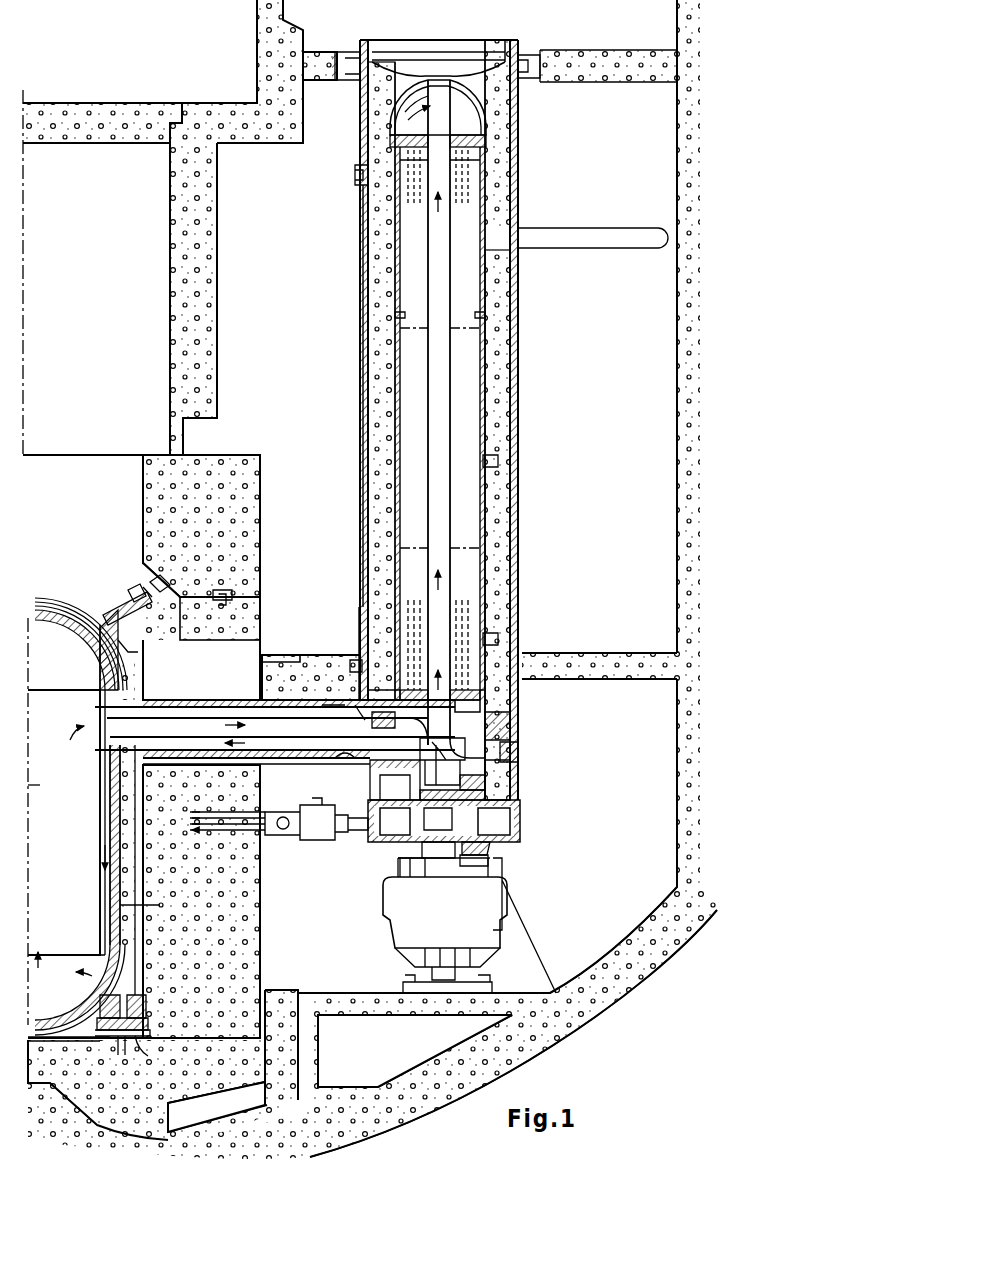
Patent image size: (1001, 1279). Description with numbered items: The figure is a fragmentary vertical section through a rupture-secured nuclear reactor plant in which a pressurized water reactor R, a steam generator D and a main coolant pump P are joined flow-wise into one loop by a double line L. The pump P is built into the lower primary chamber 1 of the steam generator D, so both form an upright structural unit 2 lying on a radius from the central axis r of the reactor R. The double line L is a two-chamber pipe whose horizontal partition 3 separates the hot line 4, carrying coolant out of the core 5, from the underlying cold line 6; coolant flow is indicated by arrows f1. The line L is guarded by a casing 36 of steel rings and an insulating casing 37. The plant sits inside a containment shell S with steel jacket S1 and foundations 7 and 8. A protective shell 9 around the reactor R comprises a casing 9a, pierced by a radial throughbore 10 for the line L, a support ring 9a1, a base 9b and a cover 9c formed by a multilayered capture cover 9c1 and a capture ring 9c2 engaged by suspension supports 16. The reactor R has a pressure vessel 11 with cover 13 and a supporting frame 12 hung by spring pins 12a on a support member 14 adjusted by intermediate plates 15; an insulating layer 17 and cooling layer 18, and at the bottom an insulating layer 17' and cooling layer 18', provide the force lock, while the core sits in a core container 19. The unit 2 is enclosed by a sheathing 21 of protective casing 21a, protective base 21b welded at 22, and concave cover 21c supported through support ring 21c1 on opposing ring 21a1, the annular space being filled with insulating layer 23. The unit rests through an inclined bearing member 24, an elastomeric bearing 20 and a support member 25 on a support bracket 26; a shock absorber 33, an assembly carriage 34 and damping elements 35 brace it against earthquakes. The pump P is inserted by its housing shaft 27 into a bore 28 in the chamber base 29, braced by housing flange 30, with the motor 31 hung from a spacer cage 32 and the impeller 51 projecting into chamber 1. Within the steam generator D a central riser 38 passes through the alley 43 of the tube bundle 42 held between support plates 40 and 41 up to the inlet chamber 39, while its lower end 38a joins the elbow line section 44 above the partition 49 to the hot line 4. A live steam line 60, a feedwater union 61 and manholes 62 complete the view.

The lower primary chamber 1 is at (485, 710).
The structural unit 2 is at (526, 572).
The partition 3 is at (282, 750).
The hot line 4 is at (300, 707).
The core 5 is at (57, 836).
The cold line 6 is at (322, 764).
The foundation 7 is at (58, 1120).
The foundation 8 is at (428, 1012).
The shell protective against rupture 9 is at (268, 938).
The casing 9a is at (248, 866).
The support ring 9a1 is at (245, 560).
The base 9b is at (218, 1084).
The cover 9c is at (70, 616).
The capture cover 9c1 is at (32, 606).
The capture ring 9c2 is at (96, 628).
The radial throughbore 10 is at (190, 700).
The steel pressure vessel 11 is at (120, 808).
The supporting frame 12 is at (126, 992).
The spring rods 12a is at (138, 1010).
The cover 13 is at (74, 657).
The support member 14 is at (146, 1028).
The intermediate plates 15 is at (142, 1042).
The suspension supports 16 is at (142, 590).
The insulating layer 17 is at (151, 870).
The insulating layer 17' is at (67, 1055).
The cooling layer 18 is at (157, 880).
The cooling layer 18' is at (64, 1057).
The core container 19 is at (100, 890).
The bearing 20 is at (480, 872).
The sheathing 21 is at (360, 305).
The protective casing 21a is at (368, 370).
The opposing ring 21a1 is at (518, 46).
The protective base 21b is at (520, 828).
The protective cover 21c is at (396, 66).
The support ring 21c1 is at (502, 60).
The weld 22 is at (518, 796).
The insulating layer 23 is at (383, 415).
The bearing member 24 is at (492, 848).
The support member 25 is at (484, 866).
The support bracket 26 is at (518, 932).
The housing shaft 27 is at (468, 780).
The through-insertion bore 28 is at (472, 792).
The chamber base 29 is at (386, 792).
The housing flange 30 is at (432, 842).
The pump motor 31 is at (420, 935).
The spacer member 32 is at (396, 880).
The shock absorber 33 is at (318, 840).
The assembly carriage 34 is at (500, 986).
The damping elements 35 is at (348, 80).
The casing 36 is at (320, 708).
The insulating casing 37 is at (305, 756).
The riser pipe 38 is at (452, 420).
The lower end of riser pipe 38a is at (448, 642).
The inlet chamber 39 is at (478, 108).
The tube support plate 40 is at (492, 692).
The tube support plate 41 is at (488, 144).
The tube bundle 42 is at (472, 178).
The pipe passageway 43 is at (445, 288).
The line section 44 is at (502, 716).
The partition 49 is at (377, 712).
The impeller 51 is at (352, 764).
The live steam line 60 is at (580, 250).
The feedwater union 61 is at (498, 461).
The manhole openings 62 is at (362, 178).
The steam generator D is at (492, 366).
The double line L is at (270, 658).
The main coolant pump P is at (476, 774).
The pressurized water reactor R is at (178, 918).
The containment shell S is at (548, 1022).
The steel jacket S1 is at (668, 946).
The flow arrows f1 is at (434, 216).
The central axis r is at (39, 785).